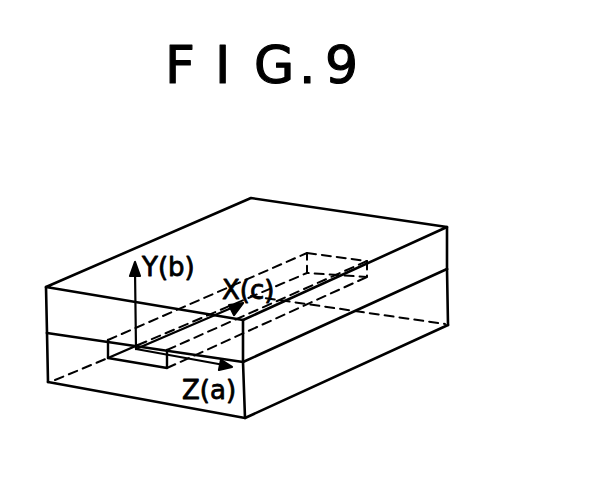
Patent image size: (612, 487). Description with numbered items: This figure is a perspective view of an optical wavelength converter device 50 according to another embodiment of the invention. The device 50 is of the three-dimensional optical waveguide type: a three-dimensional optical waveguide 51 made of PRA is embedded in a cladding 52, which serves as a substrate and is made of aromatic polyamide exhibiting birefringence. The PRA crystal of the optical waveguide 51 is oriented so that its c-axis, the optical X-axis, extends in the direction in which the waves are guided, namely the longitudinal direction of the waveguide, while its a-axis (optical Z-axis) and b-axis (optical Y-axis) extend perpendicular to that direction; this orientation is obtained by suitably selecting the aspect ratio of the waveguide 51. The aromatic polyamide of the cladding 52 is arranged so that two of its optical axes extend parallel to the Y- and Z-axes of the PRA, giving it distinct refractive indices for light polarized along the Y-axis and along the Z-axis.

The optical wavelength converter device 50 is at (202, 172).
The three-dimensional optical waveguide 51 is at (123, 363).
The cladding (substrate) 52 is at (108, 270).